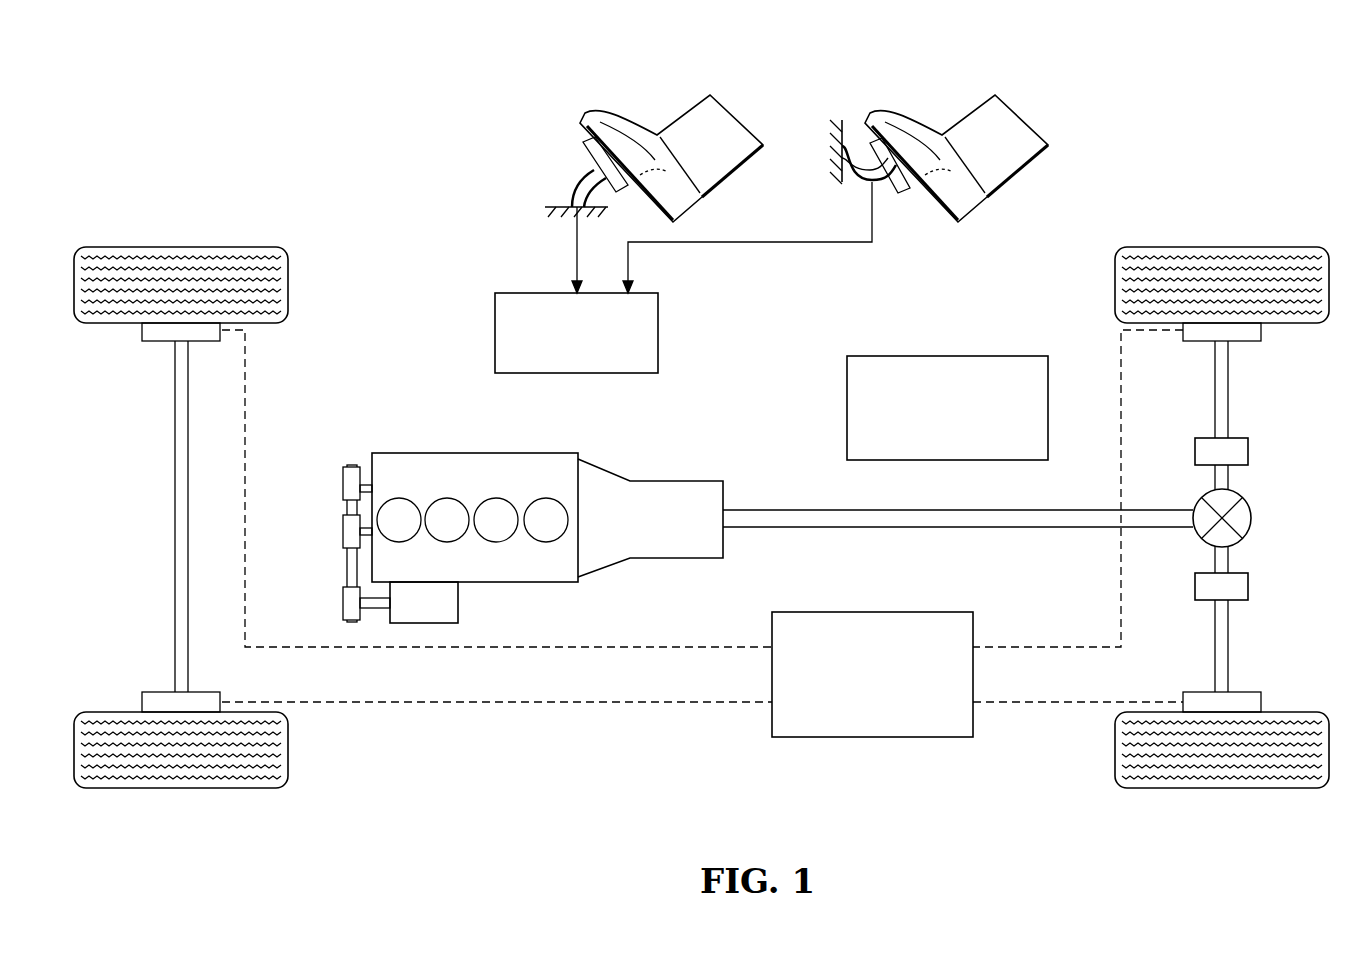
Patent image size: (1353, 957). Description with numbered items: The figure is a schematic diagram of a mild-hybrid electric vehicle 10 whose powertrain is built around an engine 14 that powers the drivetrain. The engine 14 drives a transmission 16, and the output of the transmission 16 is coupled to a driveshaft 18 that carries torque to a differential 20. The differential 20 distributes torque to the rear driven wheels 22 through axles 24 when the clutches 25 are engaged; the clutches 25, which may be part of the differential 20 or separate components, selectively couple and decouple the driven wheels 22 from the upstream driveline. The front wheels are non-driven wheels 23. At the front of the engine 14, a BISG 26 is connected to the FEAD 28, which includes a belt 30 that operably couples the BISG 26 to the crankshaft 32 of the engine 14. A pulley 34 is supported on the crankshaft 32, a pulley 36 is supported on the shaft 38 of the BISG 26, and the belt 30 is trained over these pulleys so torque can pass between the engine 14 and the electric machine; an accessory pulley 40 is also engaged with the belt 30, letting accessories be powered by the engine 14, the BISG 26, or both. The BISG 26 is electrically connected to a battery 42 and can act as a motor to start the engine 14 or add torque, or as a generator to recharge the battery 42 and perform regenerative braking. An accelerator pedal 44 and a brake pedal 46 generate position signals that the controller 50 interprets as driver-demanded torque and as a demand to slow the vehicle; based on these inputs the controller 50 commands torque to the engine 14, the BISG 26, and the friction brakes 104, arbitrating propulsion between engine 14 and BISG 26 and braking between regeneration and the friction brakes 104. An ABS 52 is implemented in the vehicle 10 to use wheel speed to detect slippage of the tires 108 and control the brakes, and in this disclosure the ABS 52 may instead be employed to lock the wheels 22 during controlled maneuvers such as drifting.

The mild-hybrid electric vehicle 10 is at (1110, 82).
The engine 14 is at (530, 452).
The transmission 16 is at (658, 480).
The driveshaft 18 is at (845, 508).
The differential 20 is at (1251, 521).
The driven wheels 22 is at (1195, 247).
The non-driven wheels 23 is at (138, 247).
The axles 24 is at (1214, 665).
The clutches 25 is at (1248, 452).
The BISG 26 is at (458, 601).
The FEAD 28 is at (270, 523).
The belt 30 is at (343, 568).
The crankshaft 32 is at (364, 479).
The pulley 34 is at (343, 532).
The pulley 36 is at (343, 596).
The shaft 38 is at (373, 608).
The pulley 40 is at (343, 486).
The battery 42 is at (928, 356).
The accelerator pedal 44 is at (587, 153).
The brake pedal 46 is at (904, 196).
The controller 50 is at (535, 292).
The anti-lock braking system 52 is at (862, 612).
The friction brakes 104 is at (1262, 331).
The tires 108 is at (1117, 303).